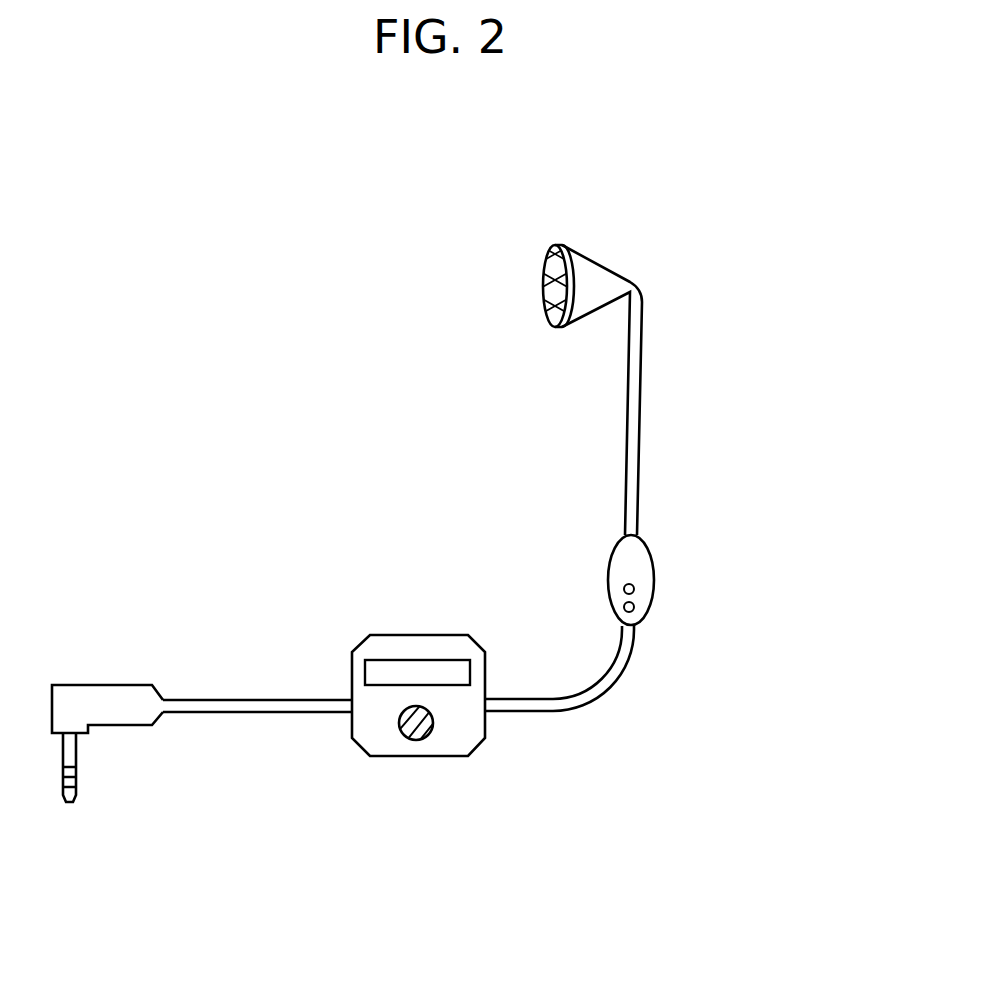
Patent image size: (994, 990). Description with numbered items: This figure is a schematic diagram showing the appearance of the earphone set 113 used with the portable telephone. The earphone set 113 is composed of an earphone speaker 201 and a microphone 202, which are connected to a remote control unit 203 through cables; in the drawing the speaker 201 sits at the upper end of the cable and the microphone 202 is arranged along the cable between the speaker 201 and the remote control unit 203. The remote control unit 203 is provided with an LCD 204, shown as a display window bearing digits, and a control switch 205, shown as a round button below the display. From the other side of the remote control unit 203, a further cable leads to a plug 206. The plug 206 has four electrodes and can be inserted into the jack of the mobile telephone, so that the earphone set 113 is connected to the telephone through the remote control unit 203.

The earphone set 113 is at (797, 292).
The earphone speaker 201 is at (545, 303).
The microphone 202 is at (608, 554).
The remote control unit 203 is at (390, 634).
The LCD 204 is at (430, 661).
The control switch 205 is at (416, 741).
The plug 206 is at (78, 783).